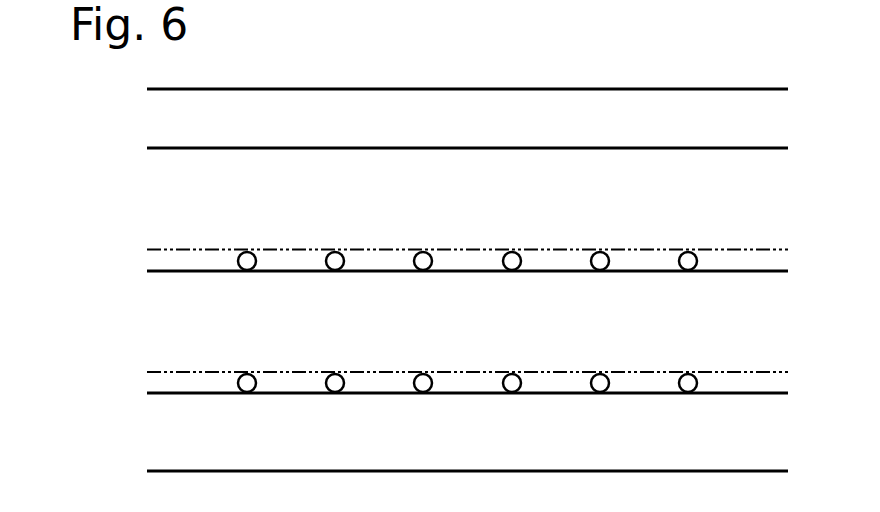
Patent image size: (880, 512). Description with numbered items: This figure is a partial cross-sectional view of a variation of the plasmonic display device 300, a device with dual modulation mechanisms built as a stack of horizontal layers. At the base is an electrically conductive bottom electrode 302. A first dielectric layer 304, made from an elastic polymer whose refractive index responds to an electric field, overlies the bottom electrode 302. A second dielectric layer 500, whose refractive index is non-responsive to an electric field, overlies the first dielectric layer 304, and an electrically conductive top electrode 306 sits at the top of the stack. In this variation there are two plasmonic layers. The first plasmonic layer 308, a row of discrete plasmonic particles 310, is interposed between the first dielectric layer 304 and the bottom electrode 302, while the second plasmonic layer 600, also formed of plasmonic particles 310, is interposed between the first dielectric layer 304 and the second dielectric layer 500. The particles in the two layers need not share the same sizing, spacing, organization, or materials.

The plasmonic display device 300 is at (760, 58).
The bottom electrode 302 is at (492, 454).
The first dielectric layer 304 is at (492, 306).
The top electrode 306 is at (492, 132).
The first plasmonic layer 308 is at (155, 384).
The plasmonic particles 310 is at (257, 261).
The second dielectric layer 500 is at (492, 196).
The second plasmonic layer 600 is at (155, 261).